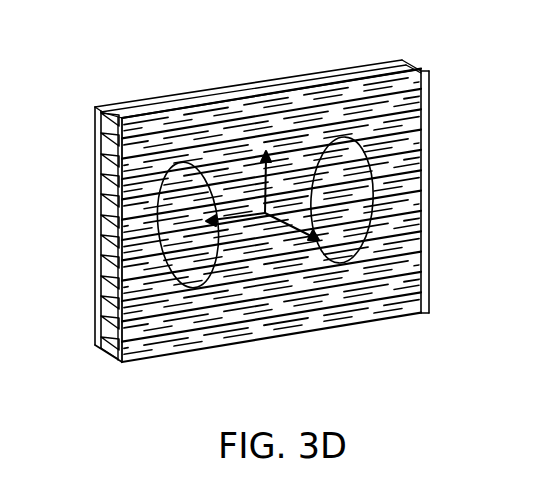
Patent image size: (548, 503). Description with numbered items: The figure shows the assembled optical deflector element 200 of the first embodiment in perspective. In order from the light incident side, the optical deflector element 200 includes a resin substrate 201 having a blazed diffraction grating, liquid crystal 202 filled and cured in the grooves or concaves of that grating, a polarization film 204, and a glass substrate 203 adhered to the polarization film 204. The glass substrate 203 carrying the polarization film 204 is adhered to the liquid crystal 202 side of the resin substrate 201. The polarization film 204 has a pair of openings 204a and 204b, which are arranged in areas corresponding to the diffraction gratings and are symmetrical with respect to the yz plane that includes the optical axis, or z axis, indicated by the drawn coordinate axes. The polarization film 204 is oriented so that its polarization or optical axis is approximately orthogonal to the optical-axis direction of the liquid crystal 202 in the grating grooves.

The optical deflector element 200 is at (432, 359).
The resin substrate 201 is at (96, 136).
The liquid crystal 202 is at (104, 224).
The glass substrate 203 is at (430, 93).
The polarization film 204 is at (135, 117).
The opening 204a is at (183, 235).
The opening 204b is at (345, 207).